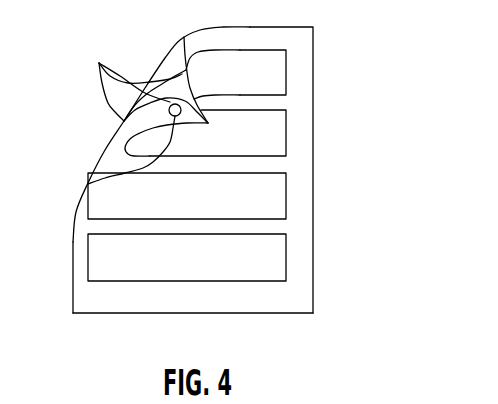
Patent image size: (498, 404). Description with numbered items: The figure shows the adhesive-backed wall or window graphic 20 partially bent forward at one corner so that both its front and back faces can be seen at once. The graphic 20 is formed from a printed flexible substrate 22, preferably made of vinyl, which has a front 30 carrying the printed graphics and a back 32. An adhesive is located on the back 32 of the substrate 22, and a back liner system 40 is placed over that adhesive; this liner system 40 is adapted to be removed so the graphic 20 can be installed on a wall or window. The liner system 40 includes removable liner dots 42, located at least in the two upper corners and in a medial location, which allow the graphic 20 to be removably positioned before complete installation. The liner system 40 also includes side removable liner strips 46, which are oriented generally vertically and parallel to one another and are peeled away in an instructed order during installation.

The adhesive-backed wall or window graphic 20 is at (314, 74).
The printed flexible substrate 22 is at (273, 302).
The front 30 is at (297, 163).
The back 32 is at (113, 139).
The back liner system 40 is at (165, 64).
The removable liner dots 42 is at (88, 184).
The side removable liner strips 46 is at (134, 76).